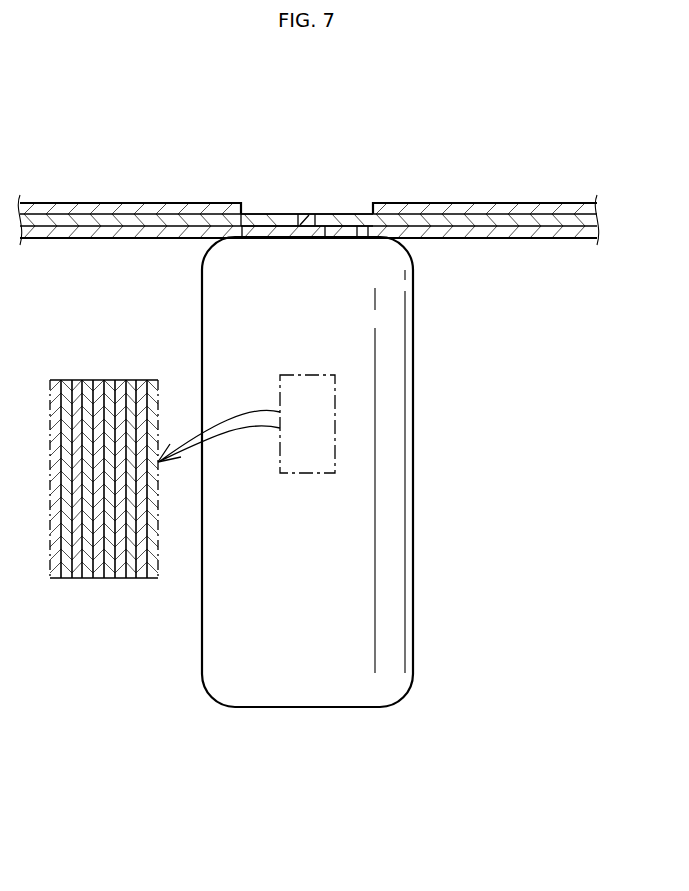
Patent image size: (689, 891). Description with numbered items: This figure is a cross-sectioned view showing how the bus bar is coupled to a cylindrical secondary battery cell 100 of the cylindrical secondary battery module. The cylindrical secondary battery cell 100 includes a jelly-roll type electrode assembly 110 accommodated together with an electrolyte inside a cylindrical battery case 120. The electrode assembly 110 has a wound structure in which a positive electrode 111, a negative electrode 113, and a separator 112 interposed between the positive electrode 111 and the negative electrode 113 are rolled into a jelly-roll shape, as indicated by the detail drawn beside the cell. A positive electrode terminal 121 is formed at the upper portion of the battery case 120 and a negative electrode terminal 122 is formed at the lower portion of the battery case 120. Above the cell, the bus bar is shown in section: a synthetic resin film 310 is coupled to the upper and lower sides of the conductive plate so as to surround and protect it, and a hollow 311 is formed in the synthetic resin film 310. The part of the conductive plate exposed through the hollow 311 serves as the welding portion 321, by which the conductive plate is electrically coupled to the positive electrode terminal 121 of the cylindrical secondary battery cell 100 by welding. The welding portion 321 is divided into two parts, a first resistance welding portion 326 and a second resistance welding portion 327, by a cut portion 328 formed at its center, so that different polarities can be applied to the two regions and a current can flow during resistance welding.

The cylindrical secondary battery cell 100 is at (433, 622).
The electrode assembly 110 is at (137, 637).
The positive electrode 111 is at (68, 578).
The separator 112 is at (78, 578).
The negative electrode 113 is at (87, 578).
The cylindrical battery case 120 is at (395, 366).
The positive electrode terminal 121 is at (267, 237).
The negative electrode terminal 122 is at (305, 707).
The synthetic resin film 310 is at (141, 203).
The hollow 311 is at (283, 213).
The welding portion 321 is at (225, 127).
The first resistance welding portion 326 is at (253, 213).
The second resistance welding portion 327 is at (340, 213).
The cut portion 328 is at (305, 221).